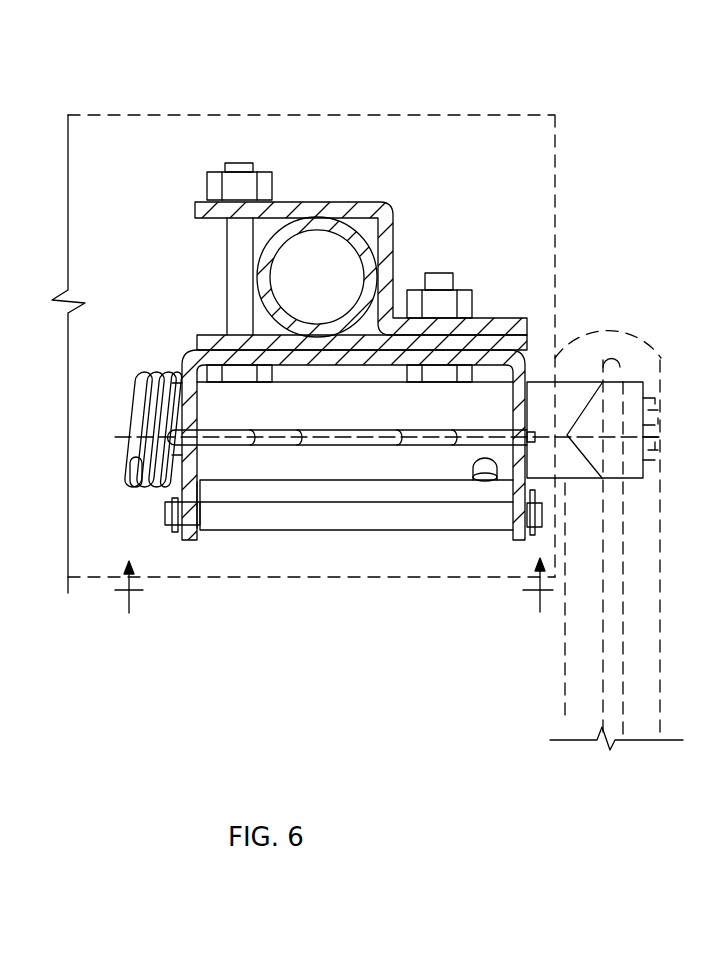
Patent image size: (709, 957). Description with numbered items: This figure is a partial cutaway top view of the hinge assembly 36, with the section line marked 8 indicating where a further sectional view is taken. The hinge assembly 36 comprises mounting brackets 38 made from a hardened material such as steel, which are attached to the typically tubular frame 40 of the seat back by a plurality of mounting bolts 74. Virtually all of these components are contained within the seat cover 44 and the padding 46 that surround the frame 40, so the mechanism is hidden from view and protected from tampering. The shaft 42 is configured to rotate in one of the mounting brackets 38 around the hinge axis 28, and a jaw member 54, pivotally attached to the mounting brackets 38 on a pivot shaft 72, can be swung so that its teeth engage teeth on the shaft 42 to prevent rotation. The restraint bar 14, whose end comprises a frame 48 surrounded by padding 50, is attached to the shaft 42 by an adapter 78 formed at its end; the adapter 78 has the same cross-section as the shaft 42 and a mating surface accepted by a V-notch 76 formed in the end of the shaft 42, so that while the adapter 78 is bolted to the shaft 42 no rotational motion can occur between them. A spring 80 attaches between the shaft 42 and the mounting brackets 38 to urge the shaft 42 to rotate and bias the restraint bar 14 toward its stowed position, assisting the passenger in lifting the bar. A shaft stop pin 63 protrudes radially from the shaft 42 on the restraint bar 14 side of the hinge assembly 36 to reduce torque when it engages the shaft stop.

The section line 8- 8 is at (336, 591).
The restraint bar 14 is at (565, 683).
The hinge axis 28 is at (118, 437).
The hinge assembly 36 is at (318, 597).
The mounting brackets 38 is at (527, 365).
The frame 40 is at (387, 202).
The shaft 42 is at (405, 463).
The seat cover 44 is at (485, 115).
The padding 46 is at (135, 148).
The frame 48 is at (613, 703).
The padding 50 is at (648, 722).
The jaw member 54 is at (373, 518).
The shaft stop pin 63 is at (487, 480).
The pivot shaft 72 is at (165, 512).
The mounting bolts 74 is at (441, 273).
The V-notch 76 is at (570, 434).
The adapter 78 is at (655, 396).
The spring 80 is at (143, 485).